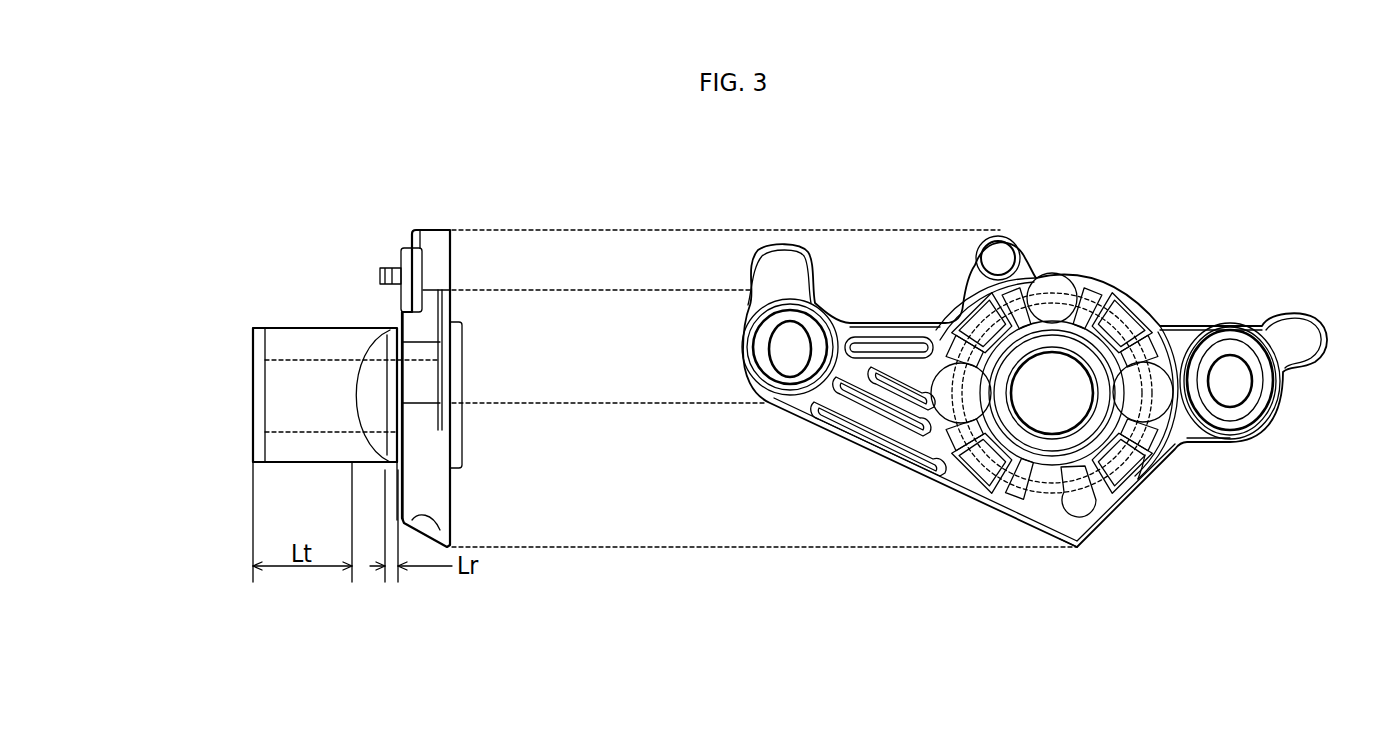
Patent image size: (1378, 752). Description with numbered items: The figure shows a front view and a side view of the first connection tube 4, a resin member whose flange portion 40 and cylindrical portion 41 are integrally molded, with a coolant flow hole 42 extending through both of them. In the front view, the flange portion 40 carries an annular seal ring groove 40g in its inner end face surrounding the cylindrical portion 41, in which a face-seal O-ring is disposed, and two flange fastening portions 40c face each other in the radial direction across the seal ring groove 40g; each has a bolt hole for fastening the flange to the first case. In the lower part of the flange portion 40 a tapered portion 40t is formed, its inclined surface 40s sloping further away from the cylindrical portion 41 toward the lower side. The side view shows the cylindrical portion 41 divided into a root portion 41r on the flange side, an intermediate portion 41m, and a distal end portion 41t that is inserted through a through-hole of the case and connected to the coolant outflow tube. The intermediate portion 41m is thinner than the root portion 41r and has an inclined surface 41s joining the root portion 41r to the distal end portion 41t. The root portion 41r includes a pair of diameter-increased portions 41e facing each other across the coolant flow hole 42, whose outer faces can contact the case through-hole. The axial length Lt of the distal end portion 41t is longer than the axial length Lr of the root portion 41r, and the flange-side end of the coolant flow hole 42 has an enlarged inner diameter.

The first connection tube 4 is at (1160, 258).
The flange portion 40 is at (430, 245).
The flange fastening portion 40c is at (742, 352).
The seal ring groove 40g is at (1140, 490).
The tapered portion 40t is at (1085, 553).
The inclined surface 40s is at (430, 515).
The cylindrical portion 41 is at (248, 382).
The distal end portion 41t is at (288, 337).
The inclined surface 41s is at (373, 338).
The diameter-increased portion 41e is at (403, 397).
The root portion 41r is at (407, 447).
The intermediate portion 41m is at (358, 447).
The coolant flow hole 42 is at (293, 360).